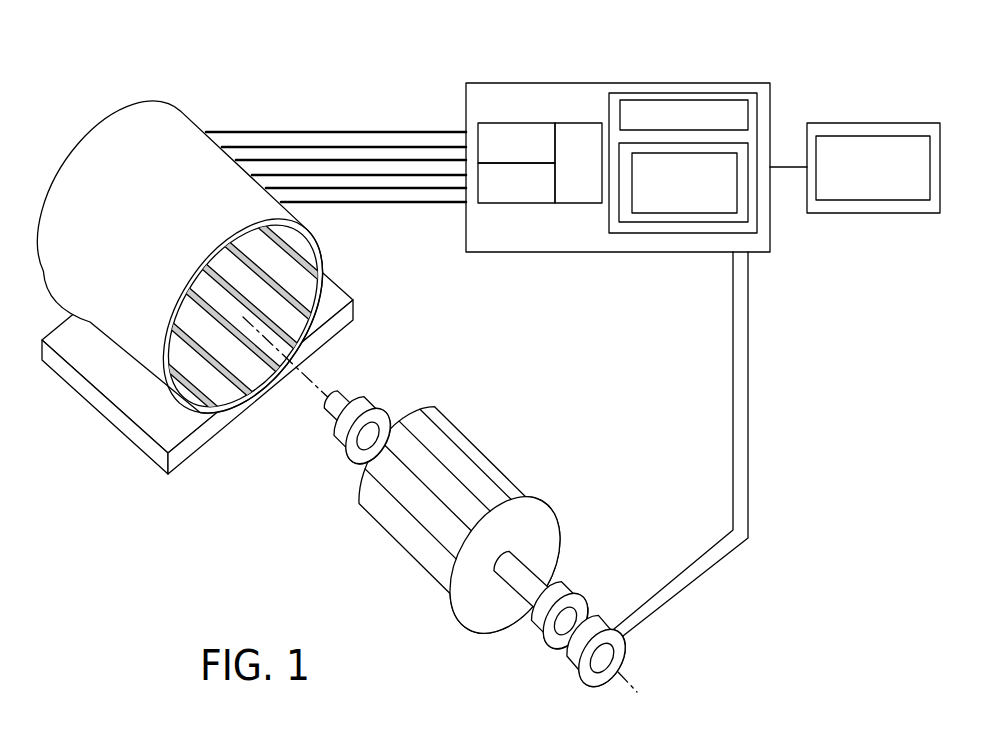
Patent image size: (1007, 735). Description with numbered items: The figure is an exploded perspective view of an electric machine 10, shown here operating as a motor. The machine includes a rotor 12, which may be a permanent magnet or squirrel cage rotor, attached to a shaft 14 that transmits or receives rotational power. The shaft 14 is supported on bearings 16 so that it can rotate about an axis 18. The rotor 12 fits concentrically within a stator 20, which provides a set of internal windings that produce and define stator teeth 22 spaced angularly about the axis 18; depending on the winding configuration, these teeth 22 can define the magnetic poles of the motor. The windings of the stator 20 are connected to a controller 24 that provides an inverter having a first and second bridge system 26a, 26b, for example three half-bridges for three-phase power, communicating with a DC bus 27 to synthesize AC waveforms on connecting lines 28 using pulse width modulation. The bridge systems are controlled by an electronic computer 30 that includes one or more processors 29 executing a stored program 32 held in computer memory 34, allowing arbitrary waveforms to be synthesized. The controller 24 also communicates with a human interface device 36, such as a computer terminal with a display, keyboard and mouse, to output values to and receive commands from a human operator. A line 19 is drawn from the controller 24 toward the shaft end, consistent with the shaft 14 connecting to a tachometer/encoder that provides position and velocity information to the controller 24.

The electric machine 10 is at (112, 70).
The rotor 12 is at (568, 467).
The shaft 14 is at (575, 620).
The bearings 16 is at (370, 403).
The axis 18 is at (622, 680).
The feedback cable 19 is at (620, 645).
The stator 20 is at (90, 157).
The stator teeth 22 is at (257, 380).
The controller 24 is at (636, 164).
The first bridge system 26a is at (522, 122).
The second bridge system 26b is at (515, 203).
The DC bus 27 is at (573, 203).
The connecting lines 28 is at (332, 175).
The processors 29 is at (683, 100).
The electronic computer 30 is at (683, 164).
The stored program 32 is at (678, 213).
The computer memory 34 is at (683, 228).
The human interface device 36 is at (858, 123).